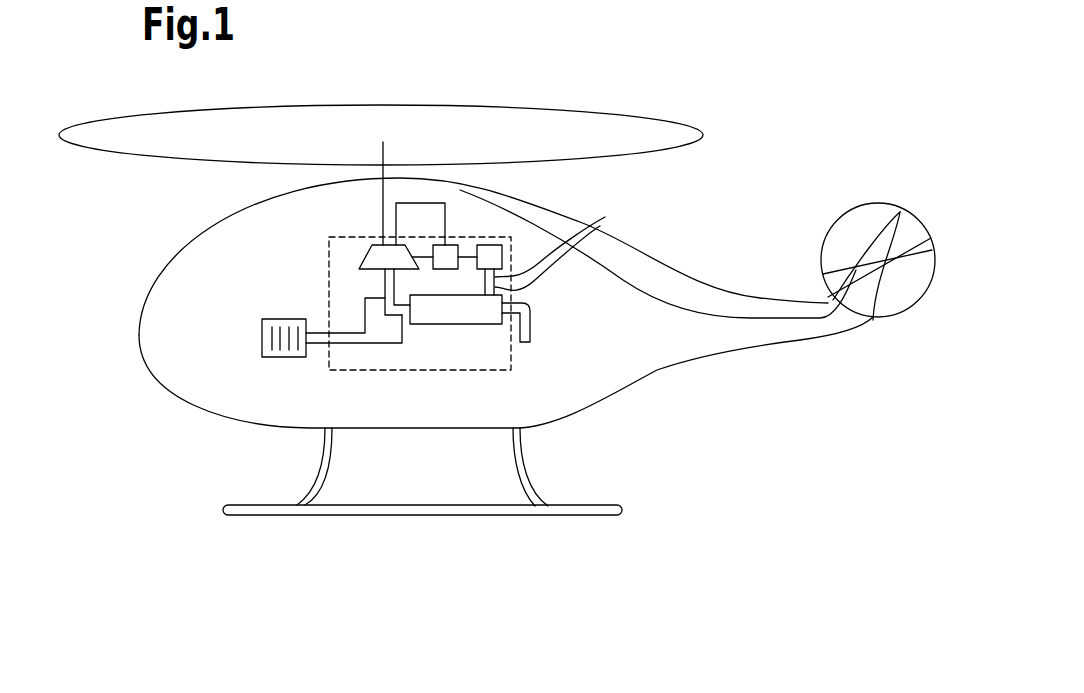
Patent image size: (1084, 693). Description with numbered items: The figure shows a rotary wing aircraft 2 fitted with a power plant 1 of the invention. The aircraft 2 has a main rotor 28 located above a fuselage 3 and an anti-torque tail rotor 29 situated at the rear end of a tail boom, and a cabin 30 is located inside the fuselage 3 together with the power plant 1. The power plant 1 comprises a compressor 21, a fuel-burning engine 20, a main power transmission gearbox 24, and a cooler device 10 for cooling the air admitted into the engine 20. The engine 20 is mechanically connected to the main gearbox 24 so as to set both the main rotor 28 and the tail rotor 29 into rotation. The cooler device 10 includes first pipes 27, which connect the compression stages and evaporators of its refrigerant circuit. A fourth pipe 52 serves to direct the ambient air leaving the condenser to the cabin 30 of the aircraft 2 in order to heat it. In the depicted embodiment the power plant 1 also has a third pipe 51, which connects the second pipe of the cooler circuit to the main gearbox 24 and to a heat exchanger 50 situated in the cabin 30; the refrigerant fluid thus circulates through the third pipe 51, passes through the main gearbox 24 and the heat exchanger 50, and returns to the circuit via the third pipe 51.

The power plant 1 is at (329, 248).
The rotary wing aircraft 2 is at (480, 346).
The fuselage 3 is at (480, 306).
The cooler device 10 is at (463, 324).
The fuel-burning engine 20 is at (444, 245).
The compressor 21 is at (488, 245).
The main power transmission gearbox 24 is at (378, 258).
The first pipes 27 is at (567, 247).
The main rotor 28 is at (646, 133).
The anti-torque tail rotor 29 is at (853, 222).
The cabin 30 is at (224, 387).
The heat exchanger 50 is at (262, 338).
The third pipe 51 is at (385, 277).
The fourth pipe 52 is at (530, 323).